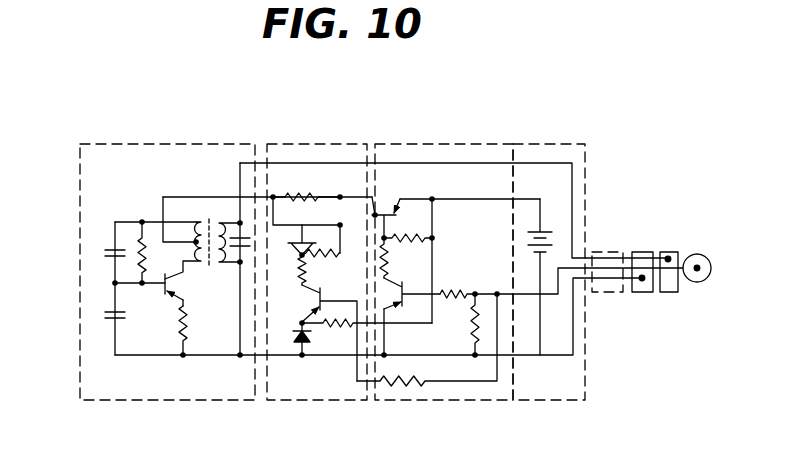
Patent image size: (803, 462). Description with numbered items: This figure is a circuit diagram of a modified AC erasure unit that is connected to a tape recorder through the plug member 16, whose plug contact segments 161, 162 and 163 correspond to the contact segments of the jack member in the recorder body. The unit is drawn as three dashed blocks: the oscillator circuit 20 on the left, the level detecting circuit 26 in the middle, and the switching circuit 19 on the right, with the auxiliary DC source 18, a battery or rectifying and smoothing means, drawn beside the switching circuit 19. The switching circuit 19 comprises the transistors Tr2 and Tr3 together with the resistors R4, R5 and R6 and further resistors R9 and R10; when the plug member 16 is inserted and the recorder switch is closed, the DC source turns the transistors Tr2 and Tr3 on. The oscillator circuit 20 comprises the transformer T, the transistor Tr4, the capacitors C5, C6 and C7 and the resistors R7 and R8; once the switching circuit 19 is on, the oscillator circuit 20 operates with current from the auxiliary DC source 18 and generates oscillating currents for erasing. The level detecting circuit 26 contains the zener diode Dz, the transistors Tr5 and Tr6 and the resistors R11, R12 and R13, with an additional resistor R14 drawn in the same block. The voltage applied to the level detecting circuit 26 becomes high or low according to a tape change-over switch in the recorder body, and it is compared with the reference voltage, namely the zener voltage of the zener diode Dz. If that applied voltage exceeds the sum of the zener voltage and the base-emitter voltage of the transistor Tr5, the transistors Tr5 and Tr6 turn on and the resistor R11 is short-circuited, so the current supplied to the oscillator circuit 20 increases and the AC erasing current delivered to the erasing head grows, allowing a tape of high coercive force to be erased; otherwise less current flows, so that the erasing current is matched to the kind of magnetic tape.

The oscillator circuit 20 is at (178, 148).
The level detecting circuit 26 is at (315, 148).
The switching circuit 19 is at (470, 148).
The auxiliary DC source 18 is at (555, 240).
The plug member 16 is at (612, 290).
The plug contact segment 161 is at (643, 252).
The plug contact segment 162 is at (668, 259).
The plug contact segment 163 is at (697, 282).
The capacitor C5 is at (238, 240).
The capacitor C6 is at (105, 250).
The capacitor C7 is at (105, 316).
The resistor R4 is at (459, 324).
The resistor R5 is at (420, 233).
The resistor R6 is at (392, 262).
The resistor R7 is at (127, 233).
The resistor R8 is at (190, 326).
The resistor R9 is at (450, 291).
The resistor R10 is at (407, 385).
The resistor R11 is at (313, 197).
The resistor R12 is at (334, 269).
The resistor R13 is at (291, 272).
The resistor R14 is at (336, 327).
The transformer T is at (207, 222).
The transistor Tr2 is at (393, 310).
The transistor Tr3 is at (386, 210).
The transistor Tr4 is at (182, 283).
The transistor Tr5 is at (312, 303).
The transistor Tr6 is at (305, 227).
The zener diode Dz is at (303, 358).